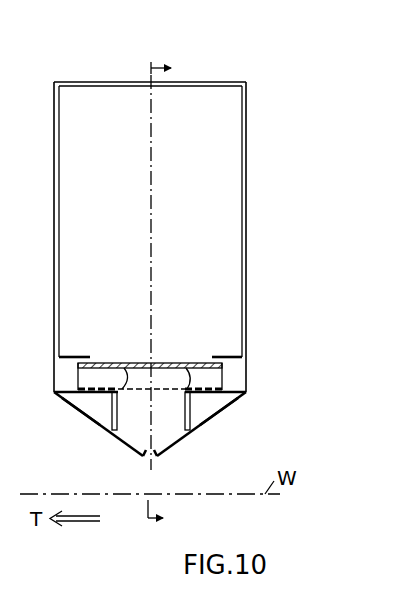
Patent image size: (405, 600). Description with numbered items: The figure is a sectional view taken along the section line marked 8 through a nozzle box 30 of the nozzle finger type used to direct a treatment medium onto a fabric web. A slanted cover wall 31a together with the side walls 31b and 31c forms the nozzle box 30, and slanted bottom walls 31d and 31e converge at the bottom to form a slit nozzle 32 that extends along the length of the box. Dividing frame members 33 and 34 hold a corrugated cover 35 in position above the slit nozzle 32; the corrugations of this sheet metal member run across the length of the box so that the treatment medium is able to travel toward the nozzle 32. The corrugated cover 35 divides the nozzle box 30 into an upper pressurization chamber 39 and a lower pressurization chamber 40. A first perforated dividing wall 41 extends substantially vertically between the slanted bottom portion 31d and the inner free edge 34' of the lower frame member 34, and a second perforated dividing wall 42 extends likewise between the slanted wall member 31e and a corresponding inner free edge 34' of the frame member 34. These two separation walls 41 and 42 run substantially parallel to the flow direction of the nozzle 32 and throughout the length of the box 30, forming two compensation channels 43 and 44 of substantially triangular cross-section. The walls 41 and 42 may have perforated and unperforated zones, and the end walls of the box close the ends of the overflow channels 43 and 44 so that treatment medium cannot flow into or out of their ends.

The nozzle box 30 is at (312, 92).
The slanted cover wall 31a is at (241, 84).
The side wall 31b is at (54, 168).
The side wall 31c is at (247, 147).
The slanted bottom wall 31d is at (134, 447).
The slanted bottom wall 31e is at (226, 406).
The slit nozzle 32 is at (153, 456).
The dividing frame member 33 is at (70, 356).
The dividing frame member 34 is at (156, 404).
The inner free edge 34' is at (154, 363).
The corrugated cover 35 is at (153, 362).
The upper pressurization chamber 39 is at (218, 209).
The lower pressurization chamber 40 is at (182, 426).
The first perforated dividing wall 41 is at (112, 422).
The second perforated dividing wall 42 is at (192, 426).
The compensation channel 43 is at (80, 411).
The compensation channel 44 is at (235, 409).
The section line 8- 8 is at (169, 296).